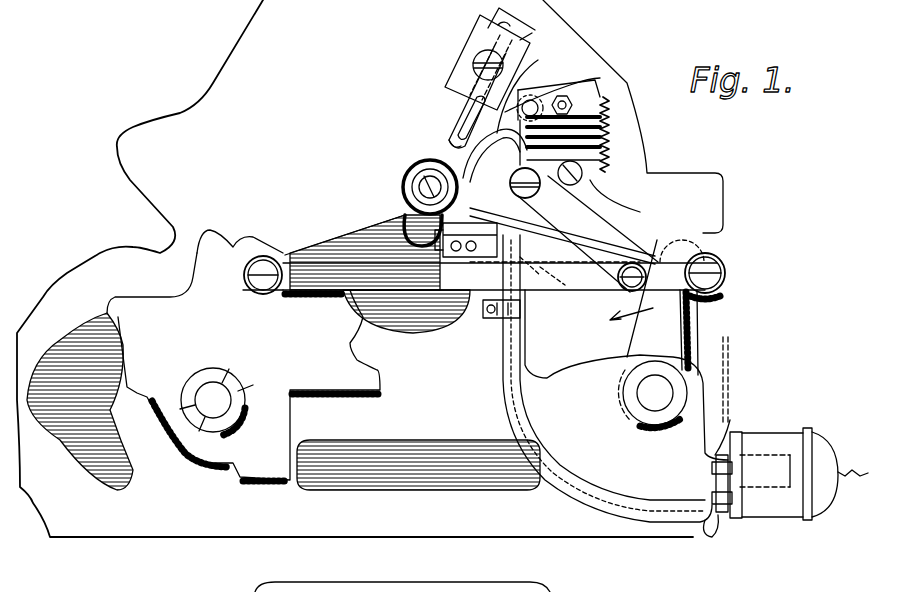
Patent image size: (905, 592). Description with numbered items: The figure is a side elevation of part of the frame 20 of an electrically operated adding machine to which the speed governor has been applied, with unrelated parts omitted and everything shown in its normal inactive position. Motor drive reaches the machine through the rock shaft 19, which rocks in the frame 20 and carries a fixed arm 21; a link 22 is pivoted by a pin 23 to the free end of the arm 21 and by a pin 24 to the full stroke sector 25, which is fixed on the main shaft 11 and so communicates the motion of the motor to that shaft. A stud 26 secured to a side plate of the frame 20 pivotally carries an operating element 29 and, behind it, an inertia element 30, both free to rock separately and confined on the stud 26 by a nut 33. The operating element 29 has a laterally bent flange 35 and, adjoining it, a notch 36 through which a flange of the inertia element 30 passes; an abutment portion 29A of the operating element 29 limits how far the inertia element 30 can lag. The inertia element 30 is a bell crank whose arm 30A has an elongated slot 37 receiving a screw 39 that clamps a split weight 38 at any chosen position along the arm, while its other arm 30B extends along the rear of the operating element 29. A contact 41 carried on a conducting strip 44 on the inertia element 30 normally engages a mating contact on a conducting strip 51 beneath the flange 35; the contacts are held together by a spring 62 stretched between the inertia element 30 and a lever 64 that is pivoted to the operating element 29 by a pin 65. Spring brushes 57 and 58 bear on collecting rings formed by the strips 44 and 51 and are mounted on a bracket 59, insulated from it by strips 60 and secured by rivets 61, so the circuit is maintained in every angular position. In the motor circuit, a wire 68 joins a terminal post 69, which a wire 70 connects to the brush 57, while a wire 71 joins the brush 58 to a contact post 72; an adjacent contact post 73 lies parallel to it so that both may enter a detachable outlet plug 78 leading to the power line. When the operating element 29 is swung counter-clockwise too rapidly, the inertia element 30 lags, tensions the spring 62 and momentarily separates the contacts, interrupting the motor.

The frame 20 is at (220, 86).
The main shaft 11 is at (210, 385).
The link 22 is at (485, 303).
The pin 24 is at (265, 262).
The full stroke sector 25 is at (243, 305).
The pin 23 is at (727, 268).
The rivets 61 is at (594, 244).
The notch or aperture 36 is at (588, 266).
The spring brush 57 is at (562, 215).
The bracket 59 is at (555, 257).
The spring brush 58 is at (394, 212).
The insulating strips 60 is at (456, 225).
The stud 26 is at (412, 176).
The nut 33 is at (418, 190).
The inertia element 30 is at (455, 103).
The elongated slot 37 is at (456, 117).
The split weight 38 is at (485, 28).
The arm of inertia element 30A is at (547, 33).
The screw 39 is at (474, 63).
The metal conducting strip 44 is at (548, 90).
The pin 65 is at (545, 85).
The lever 64 is at (567, 95).
The flange 35 is at (598, 92).
The spring 62 is at (612, 124).
The contact 41 is at (607, 147).
The metal conducting strip 51 is at (495, 155).
The operating element 29 is at (509, 183).
The arm of inertia element 30B is at (600, 168).
The abutment portion 29A is at (625, 198).
The arm 21 is at (700, 330).
The rock shaft 19 is at (648, 398).
The wire 70 is at (578, 508).
The wire 71 is at (600, 490).
The contact post 72 is at (735, 440).
The detachable outlet plug 78 is at (792, 440).
The contact post 73 is at (768, 497).
The terminal post 69 is at (735, 520).
The wire 68 is at (712, 535).